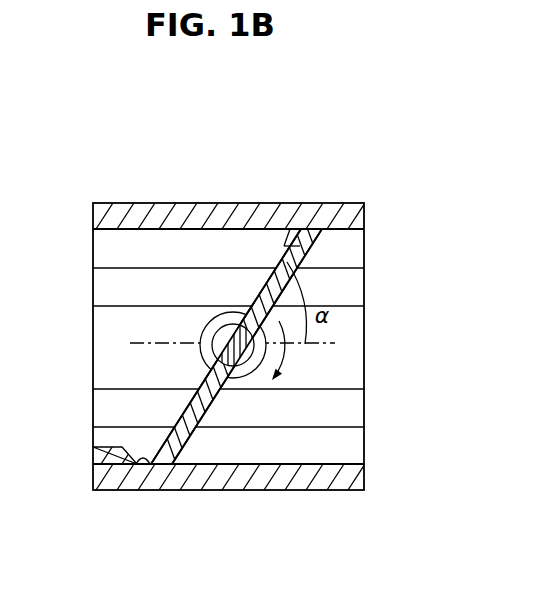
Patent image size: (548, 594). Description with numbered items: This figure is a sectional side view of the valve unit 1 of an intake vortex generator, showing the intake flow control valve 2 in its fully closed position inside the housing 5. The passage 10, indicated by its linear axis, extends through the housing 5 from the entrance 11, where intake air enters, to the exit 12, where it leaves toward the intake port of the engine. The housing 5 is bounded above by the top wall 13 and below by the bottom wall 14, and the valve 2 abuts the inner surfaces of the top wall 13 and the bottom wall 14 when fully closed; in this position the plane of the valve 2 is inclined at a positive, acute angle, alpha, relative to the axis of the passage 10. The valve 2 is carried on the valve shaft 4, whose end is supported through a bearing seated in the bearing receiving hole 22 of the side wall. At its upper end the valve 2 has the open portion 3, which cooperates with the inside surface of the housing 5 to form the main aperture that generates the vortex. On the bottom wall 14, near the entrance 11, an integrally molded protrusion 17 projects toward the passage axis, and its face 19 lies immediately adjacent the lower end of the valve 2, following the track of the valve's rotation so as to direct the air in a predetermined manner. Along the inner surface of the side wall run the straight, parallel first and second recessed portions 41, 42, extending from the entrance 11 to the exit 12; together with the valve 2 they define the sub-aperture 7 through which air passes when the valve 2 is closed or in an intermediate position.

The valve unit 1 is at (91, 170).
The intake flow control valve 2 is at (256, 288).
The open portion 3 is at (297, 243).
The valve shaft 4 is at (237, 378).
The housing 5 is at (138, 200).
The sub-aperture 7 is at (140, 295).
The passage 10 is at (330, 340).
The entrance 11 is at (116, 229).
The exit 12 is at (335, 463).
The top wall 13 is at (180, 203).
The bottom wall 14 is at (257, 483).
The protrusion 17 is at (105, 447).
The face 19 is at (145, 466).
The bearing receiving hole 22 is at (252, 366).
The first recessed portion 41 is at (334, 389).
The second recessed portion 42 is at (334, 268).